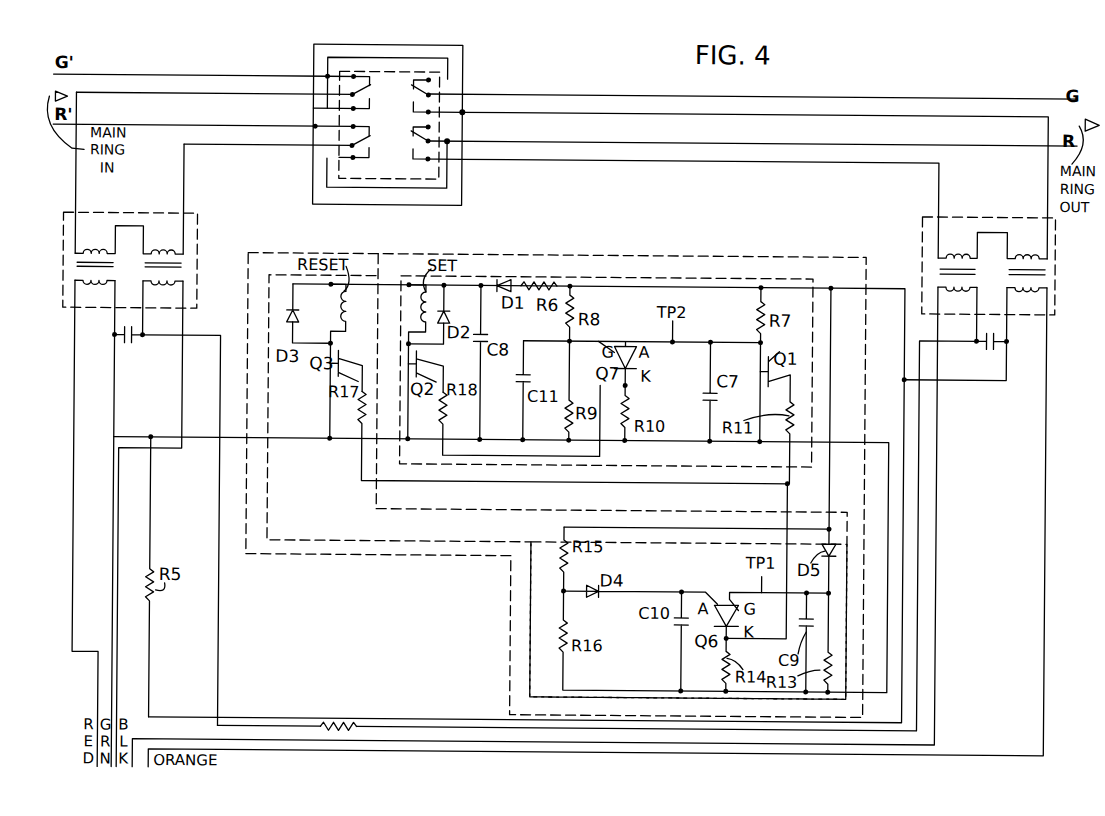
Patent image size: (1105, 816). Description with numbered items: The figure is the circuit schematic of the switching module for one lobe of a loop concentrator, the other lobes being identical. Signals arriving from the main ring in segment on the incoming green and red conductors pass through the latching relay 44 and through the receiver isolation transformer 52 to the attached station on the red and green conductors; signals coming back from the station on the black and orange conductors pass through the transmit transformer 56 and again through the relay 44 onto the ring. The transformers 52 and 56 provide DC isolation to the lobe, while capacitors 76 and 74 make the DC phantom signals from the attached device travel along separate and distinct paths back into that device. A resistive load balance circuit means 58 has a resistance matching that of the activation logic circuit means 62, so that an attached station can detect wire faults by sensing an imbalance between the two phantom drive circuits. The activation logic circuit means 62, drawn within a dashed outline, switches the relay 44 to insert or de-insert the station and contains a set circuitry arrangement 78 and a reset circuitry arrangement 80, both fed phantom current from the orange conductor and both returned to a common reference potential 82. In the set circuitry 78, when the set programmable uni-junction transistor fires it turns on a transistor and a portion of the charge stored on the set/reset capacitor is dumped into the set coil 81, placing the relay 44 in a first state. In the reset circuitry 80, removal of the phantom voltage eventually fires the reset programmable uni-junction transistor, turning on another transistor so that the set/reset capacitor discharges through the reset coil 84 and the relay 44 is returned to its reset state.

The relay 44 is at (443, 80).
The receiver isolation transformer 52 is at (196, 228).
The transmit transformer 56 is at (921, 230).
The load balance circuit means 58 is at (329, 722).
The activation logic circuit means 62 is at (822, 255).
The capacitor 74 is at (990, 348).
The capacitor 76 is at (128, 340).
The set circuitry arrangement 78 is at (751, 276).
The reset circuitry arrangement 80 is at (838, 508).
The set coil 81 is at (420, 308).
The common reference potential 82 is at (330, 442).
The reset coil 84 is at (337, 318).